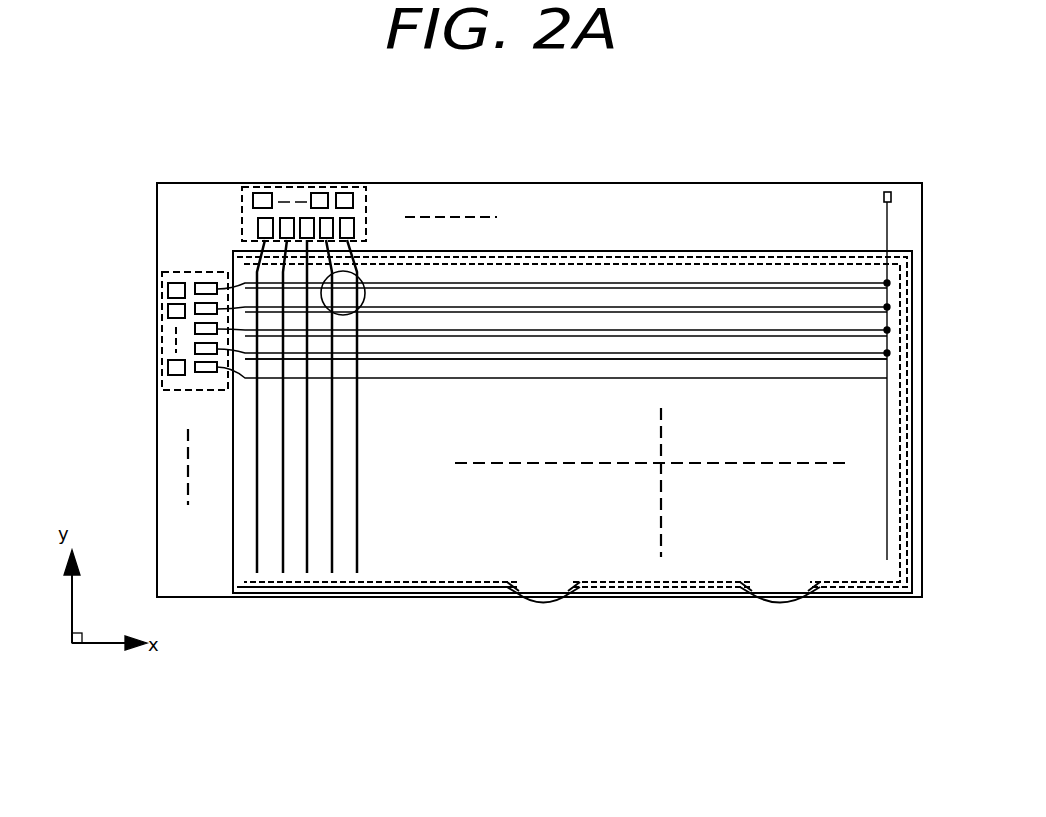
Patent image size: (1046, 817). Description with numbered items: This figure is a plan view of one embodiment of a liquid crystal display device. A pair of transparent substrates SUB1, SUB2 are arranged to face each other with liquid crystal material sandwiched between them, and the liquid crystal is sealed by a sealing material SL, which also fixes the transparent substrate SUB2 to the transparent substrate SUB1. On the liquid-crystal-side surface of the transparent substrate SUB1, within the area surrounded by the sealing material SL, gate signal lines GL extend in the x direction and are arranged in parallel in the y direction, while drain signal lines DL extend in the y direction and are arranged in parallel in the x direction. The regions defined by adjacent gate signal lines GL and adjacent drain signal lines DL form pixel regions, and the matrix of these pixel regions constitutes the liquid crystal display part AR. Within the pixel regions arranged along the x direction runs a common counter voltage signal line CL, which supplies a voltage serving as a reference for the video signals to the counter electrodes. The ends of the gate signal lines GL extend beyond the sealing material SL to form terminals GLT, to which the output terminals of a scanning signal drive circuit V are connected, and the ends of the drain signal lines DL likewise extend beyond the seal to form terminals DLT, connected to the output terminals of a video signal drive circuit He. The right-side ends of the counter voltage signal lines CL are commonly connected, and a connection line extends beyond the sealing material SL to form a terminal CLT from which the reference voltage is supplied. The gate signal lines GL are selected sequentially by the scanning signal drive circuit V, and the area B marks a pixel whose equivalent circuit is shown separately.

The transparent substrate SUB1 is at (675, 183).
The transparent substrate SUB2 is at (570, 251).
The liquid crystal display part AR is at (547, 405).
The sealing material SL is at (603, 587).
The video signal drive circuit He is at (268, 187).
The terminal DLT is at (258, 228).
The drain signal line DL is at (357, 460).
The scanning signal drive circuit V is at (165, 375).
The terminal GLT is at (205, 283).
The gate signal line GL is at (583, 380).
The common counter voltage signal line CL is at (437, 360).
The terminal CLT is at (889, 192).
The area B is at (366, 293).